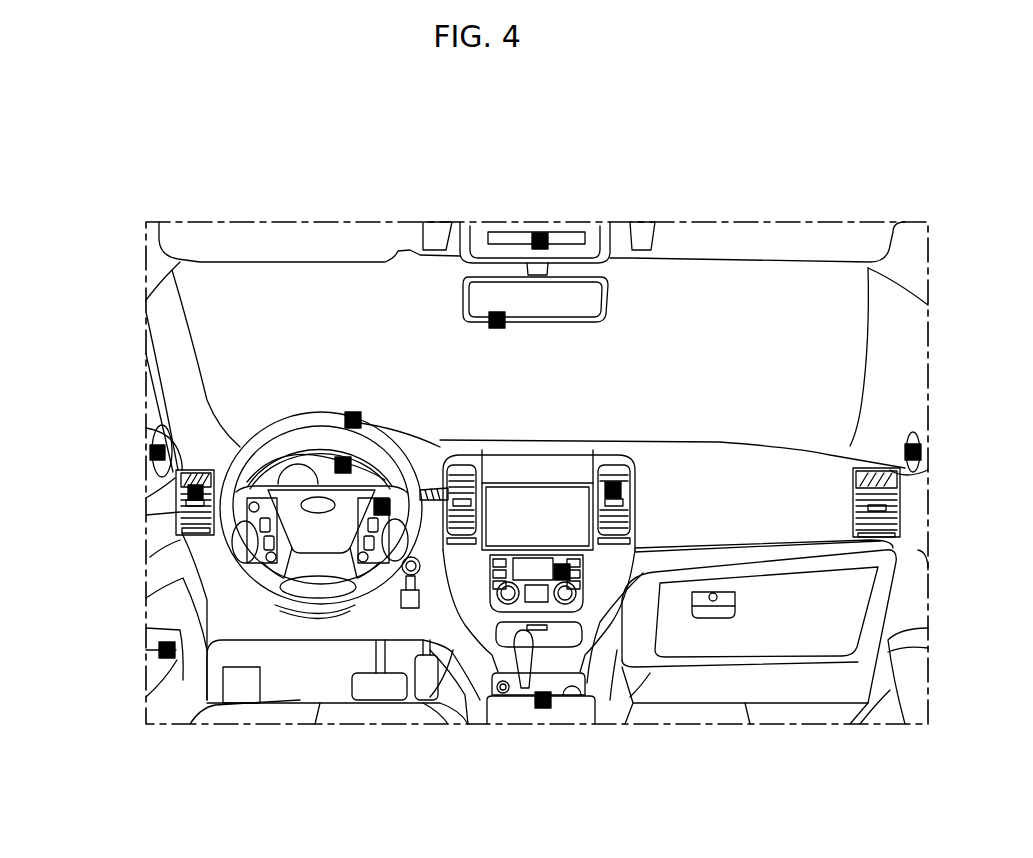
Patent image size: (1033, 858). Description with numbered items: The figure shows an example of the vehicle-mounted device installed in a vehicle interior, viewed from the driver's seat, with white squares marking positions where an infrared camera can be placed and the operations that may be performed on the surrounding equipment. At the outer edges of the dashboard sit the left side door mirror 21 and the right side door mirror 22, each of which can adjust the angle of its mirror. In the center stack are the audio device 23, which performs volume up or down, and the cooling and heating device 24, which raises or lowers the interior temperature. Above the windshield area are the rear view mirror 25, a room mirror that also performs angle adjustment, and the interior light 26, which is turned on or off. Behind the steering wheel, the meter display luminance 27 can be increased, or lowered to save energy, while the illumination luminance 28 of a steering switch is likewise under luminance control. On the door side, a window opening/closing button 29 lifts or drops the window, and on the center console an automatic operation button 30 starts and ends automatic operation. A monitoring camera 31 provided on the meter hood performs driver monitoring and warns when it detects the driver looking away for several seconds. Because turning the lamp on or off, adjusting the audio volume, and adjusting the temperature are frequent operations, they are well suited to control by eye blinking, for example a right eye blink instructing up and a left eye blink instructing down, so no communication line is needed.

The left side door mirror 21 is at (150, 452).
The right side door mirror 22 is at (905, 452).
The audio device 23 is at (613, 482).
The cooling and heating device 24 is at (562, 580).
The rear view mirror 25 is at (497, 312).
The interior light 26 is at (545, 236).
The meter display luminance 27 is at (188, 492).
The illumination luminance of a steering switch 28 is at (374, 508).
The window opening/closing button 29 is at (159, 642).
The automatic operation button 30 is at (543, 708).
The monitoring camera 31 is at (353, 414).